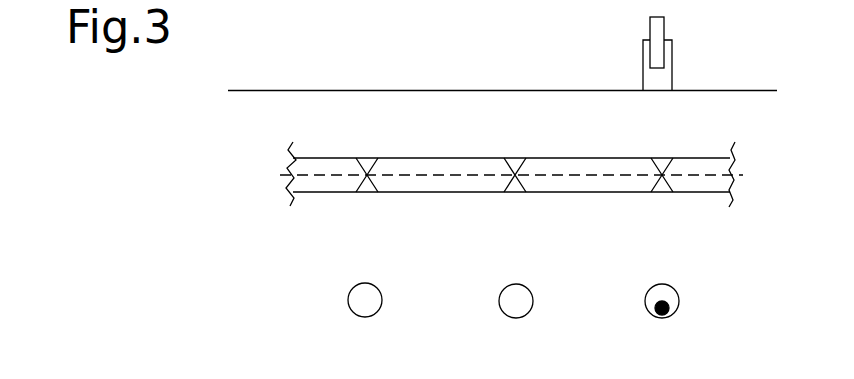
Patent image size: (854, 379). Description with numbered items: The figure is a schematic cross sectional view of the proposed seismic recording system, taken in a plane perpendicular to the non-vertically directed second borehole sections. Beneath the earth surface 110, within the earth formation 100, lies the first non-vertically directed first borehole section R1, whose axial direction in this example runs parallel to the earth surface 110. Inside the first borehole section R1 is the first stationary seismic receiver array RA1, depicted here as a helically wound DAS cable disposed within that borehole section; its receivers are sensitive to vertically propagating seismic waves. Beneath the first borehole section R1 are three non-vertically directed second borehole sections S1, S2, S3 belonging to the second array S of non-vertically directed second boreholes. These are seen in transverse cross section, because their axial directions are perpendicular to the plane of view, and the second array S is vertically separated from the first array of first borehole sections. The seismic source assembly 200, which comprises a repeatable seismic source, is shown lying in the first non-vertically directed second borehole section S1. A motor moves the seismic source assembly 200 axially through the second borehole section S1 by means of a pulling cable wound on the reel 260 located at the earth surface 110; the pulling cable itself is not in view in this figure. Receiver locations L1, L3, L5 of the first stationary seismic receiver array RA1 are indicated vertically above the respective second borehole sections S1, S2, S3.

The earth surface 110 is at (297, 91).
The reel 260 is at (655, 35).
The first non-vertically directed first borehole section R1 is at (688, 158).
The first stationary seismic receiver array RA1 is at (453, 175).
The receiver location L5 is at (370, 192).
The third receiver location L3 is at (519, 193).
The first receiver location L1 is at (665, 192).
The earth formation 100 is at (741, 247).
The second array of non-vertically directed second borehole sections S is at (337, 298).
The third non-vertically directed second borehole section S3 is at (355, 315).
The second non-vertically directed second borehole section S2 is at (503, 311).
The first non-vertically directed second borehole section S1 is at (648, 292).
The seismic source assembly 200 is at (665, 316).